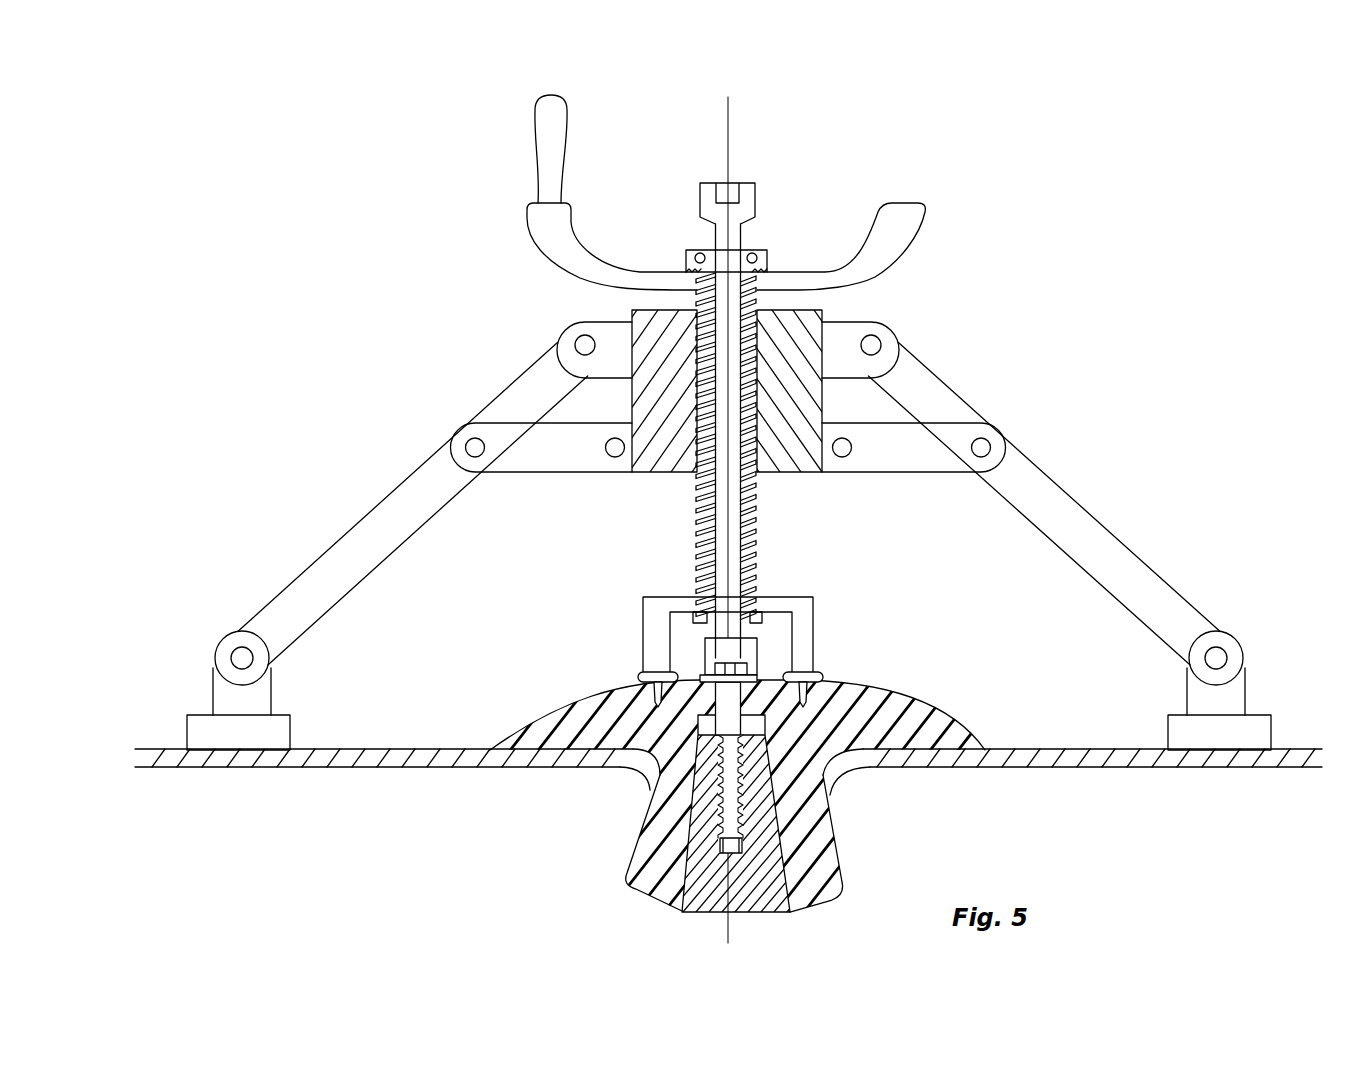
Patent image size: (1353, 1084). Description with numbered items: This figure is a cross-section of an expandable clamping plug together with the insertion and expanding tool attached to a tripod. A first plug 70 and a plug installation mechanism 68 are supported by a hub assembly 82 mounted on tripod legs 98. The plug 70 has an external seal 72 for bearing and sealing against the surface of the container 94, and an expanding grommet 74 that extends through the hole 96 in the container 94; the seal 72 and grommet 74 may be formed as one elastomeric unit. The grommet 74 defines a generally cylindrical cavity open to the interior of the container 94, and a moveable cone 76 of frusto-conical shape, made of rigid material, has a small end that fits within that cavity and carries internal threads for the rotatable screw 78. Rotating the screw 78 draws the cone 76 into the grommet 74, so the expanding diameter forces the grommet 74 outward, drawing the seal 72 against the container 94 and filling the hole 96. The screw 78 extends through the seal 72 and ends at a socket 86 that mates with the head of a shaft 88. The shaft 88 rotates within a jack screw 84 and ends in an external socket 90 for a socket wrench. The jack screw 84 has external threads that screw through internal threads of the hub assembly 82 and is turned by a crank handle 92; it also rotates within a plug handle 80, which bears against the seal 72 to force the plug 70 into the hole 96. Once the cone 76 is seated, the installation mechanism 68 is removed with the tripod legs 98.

The plug installation mechanism 68 is at (500, 371).
The first plug 70 is at (726, 782).
The seal 72 is at (575, 718).
The expanding grommet 74 is at (828, 890).
The moveable cone 76 is at (752, 905).
The rotatable screw 78 is at (733, 823).
The plug handle 80 is at (808, 650).
The hub assembly 82 is at (895, 334).
The jack screw 84 is at (757, 542).
The socket 86 is at (757, 660).
The shaft 88 is at (712, 240).
The external socket 90 is at (720, 190).
The crank handle 92 is at (905, 214).
The container 94 is at (1026, 750).
The hole 96 is at (822, 765).
The tripod legs 98 is at (1104, 506).